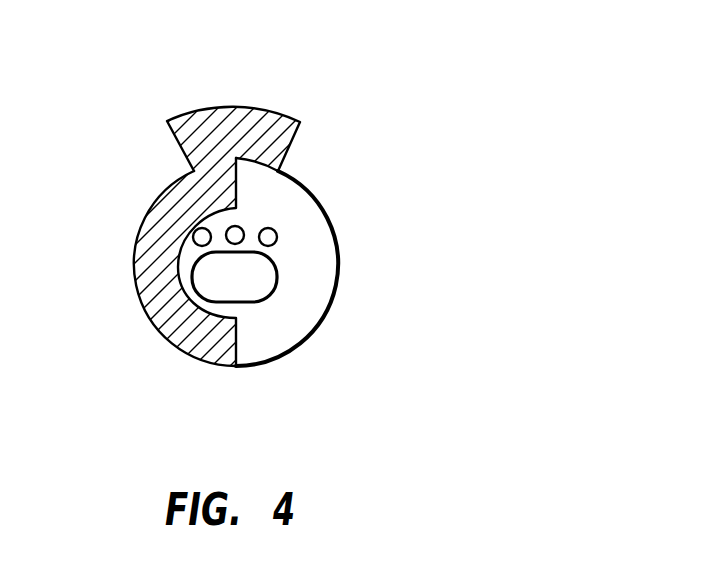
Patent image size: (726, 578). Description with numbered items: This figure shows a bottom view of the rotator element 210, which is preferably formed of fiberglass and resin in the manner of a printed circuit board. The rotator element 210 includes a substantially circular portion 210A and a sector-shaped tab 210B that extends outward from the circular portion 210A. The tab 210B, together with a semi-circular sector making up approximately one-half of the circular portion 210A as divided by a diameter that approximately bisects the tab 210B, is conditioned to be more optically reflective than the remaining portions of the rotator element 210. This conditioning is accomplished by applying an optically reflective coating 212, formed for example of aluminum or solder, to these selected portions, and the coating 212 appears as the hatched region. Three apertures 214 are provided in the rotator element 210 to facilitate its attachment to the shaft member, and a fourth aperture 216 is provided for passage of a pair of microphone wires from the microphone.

The rotator element 210 is at (296, 224).
The circular portion 210A is at (335, 277).
The sector-shaped tab 210B is at (243, 103).
The optically reflective coating 212 is at (181, 351).
The holes 214 is at (202, 227).
The fourth aperture 216 is at (276, 292).